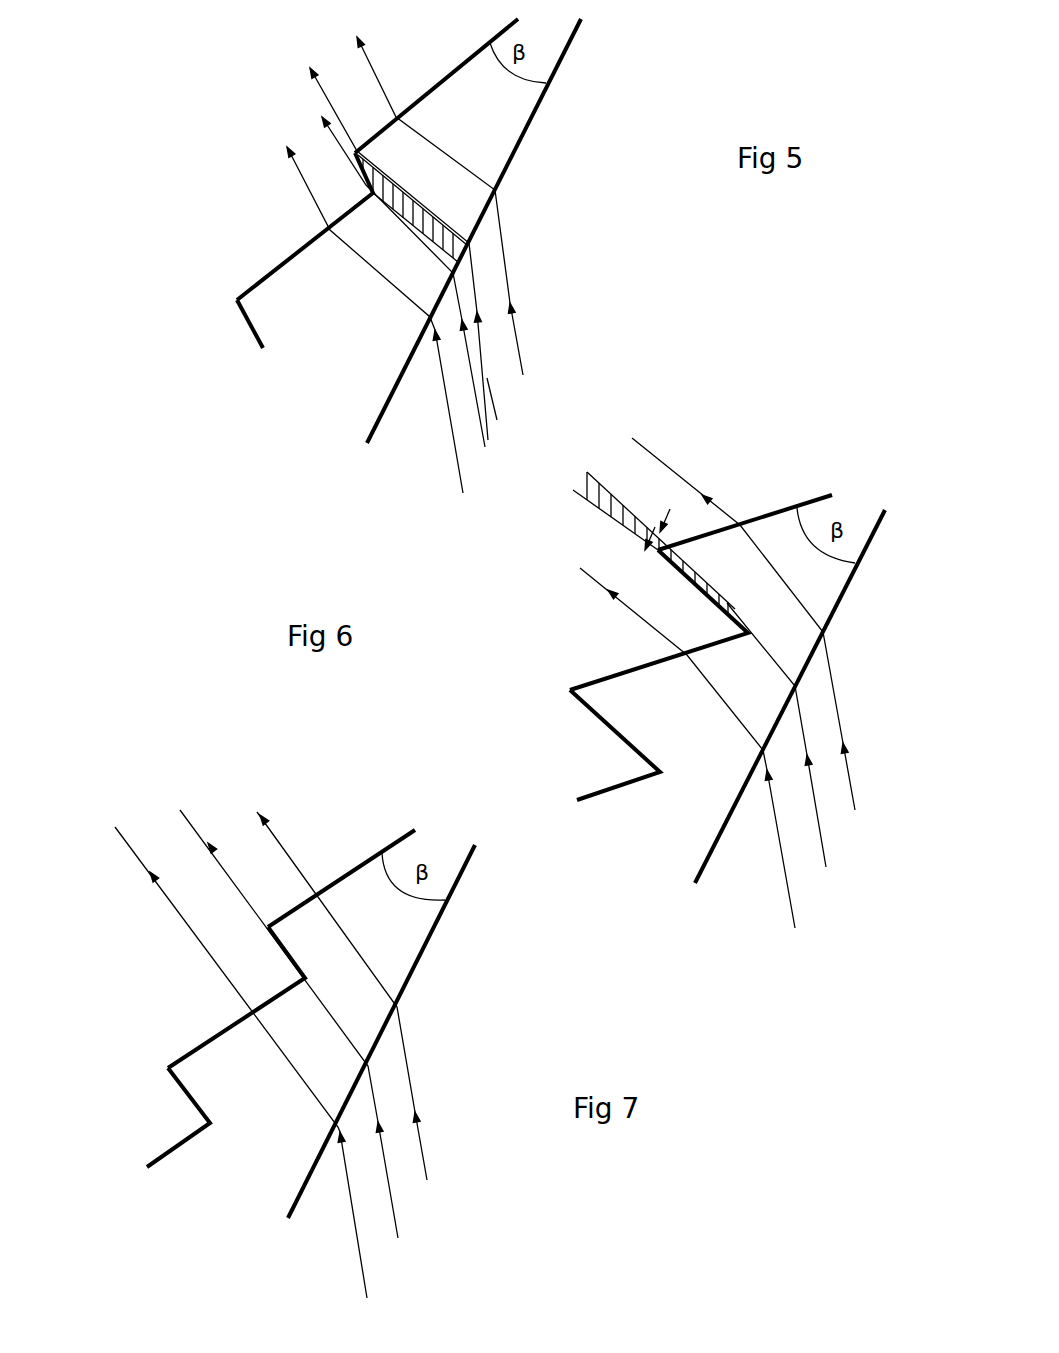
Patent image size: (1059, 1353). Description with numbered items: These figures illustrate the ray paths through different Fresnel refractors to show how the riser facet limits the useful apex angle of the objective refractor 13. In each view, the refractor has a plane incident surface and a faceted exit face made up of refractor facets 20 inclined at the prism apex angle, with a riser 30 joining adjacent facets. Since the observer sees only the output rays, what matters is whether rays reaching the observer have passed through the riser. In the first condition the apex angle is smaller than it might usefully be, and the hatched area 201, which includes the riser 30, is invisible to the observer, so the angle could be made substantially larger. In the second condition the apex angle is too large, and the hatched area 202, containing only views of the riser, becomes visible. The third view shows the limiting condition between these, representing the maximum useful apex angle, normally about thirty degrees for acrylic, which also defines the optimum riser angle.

In FIG. 5, the objective refractor 13 is at (502, 120).
In FIG. 5, the refractor facet 20 is at (293, 250).
In FIG. 6, the refractor facet 20 is at (612, 675).
In FIG. 7, the refractor facet 20 is at (200, 1045).
In FIG. 5, the riser 30 is at (248, 327).
In FIG. 6, the riser 30 is at (600, 720).
In FIG. 7, the riser 30 is at (183, 1095).
In FIG. 5, the hatched area 201 is at (422, 220).
In FIG. 6, the hatched area 202 is at (637, 530).